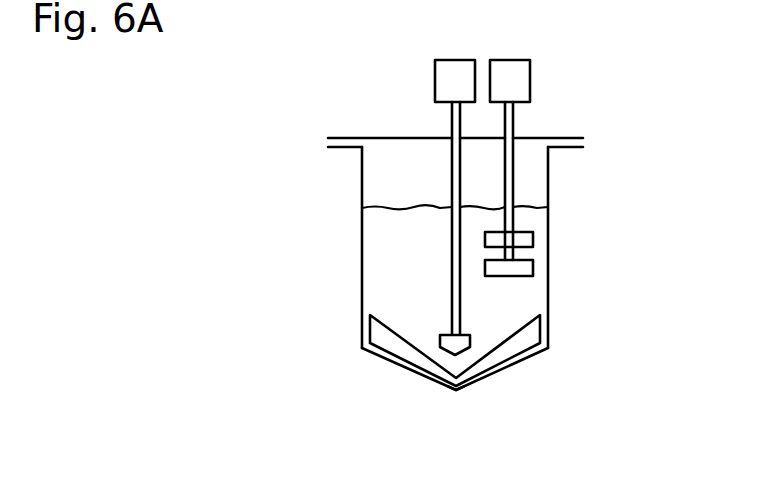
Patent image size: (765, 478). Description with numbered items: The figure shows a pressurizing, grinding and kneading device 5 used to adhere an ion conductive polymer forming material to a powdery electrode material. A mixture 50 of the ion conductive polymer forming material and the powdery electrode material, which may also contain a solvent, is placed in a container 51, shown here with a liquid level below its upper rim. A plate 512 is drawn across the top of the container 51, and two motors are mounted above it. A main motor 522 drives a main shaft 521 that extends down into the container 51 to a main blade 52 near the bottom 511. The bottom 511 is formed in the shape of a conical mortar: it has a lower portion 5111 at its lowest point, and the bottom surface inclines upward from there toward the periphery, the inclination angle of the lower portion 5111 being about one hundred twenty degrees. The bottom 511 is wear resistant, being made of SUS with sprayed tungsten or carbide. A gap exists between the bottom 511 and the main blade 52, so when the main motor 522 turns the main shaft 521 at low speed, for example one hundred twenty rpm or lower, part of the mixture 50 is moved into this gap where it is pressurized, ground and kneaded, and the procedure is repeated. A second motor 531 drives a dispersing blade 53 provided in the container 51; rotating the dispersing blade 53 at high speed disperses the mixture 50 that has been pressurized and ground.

The pressurizing, grinding and kneading device 5 is at (332, 259).
The mixture 50 is at (520, 301).
The container 51 is at (499, 306).
The bottom 511 is at (494, 375).
The lower portion 5111 is at (456, 390).
The top plate / lid 512 is at (550, 138).
The main blade 52 is at (518, 338).
The main shaft 521 is at (452, 274).
The main motor 522 is at (435, 80).
The dispersing blade 53 is at (530, 240).
The motor for stirring blade 531 is at (530, 80).